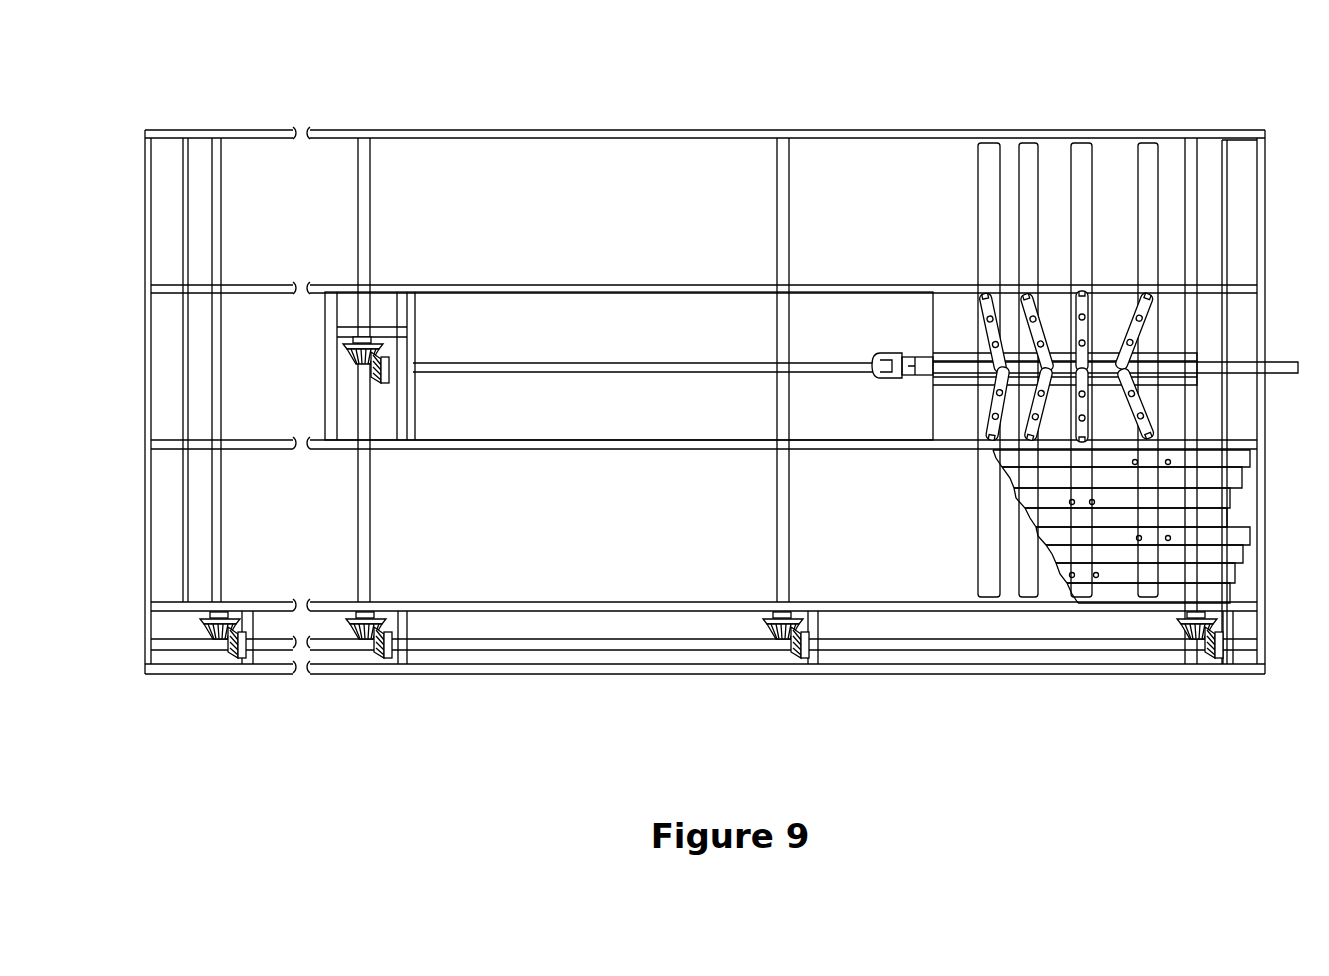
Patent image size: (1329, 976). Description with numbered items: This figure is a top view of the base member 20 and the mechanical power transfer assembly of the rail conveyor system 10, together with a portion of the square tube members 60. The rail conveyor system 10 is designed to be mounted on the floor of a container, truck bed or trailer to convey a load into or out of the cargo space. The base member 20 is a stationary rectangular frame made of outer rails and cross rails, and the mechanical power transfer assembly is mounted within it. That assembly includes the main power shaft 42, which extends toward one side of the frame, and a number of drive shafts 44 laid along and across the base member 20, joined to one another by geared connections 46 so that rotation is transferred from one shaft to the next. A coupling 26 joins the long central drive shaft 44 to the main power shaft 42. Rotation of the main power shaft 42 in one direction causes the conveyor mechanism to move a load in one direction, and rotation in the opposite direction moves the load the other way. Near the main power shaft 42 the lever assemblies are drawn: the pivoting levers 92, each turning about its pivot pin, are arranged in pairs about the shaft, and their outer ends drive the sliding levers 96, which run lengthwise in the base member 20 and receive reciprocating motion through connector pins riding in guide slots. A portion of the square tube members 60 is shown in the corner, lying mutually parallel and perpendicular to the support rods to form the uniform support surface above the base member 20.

The rail conveyor system 10 is at (1035, 93).
The base member 20 is at (198, 165).
The coupling 26 is at (900, 378).
The main power shaft 42 is at (1275, 370).
The drive shafts 44 is at (372, 225).
The geared connections 46 is at (365, 355).
The square tube members 60 is at (1235, 595).
The pivoting levers 92 is at (990, 320).
The sliding levers 96 is at (1030, 186).